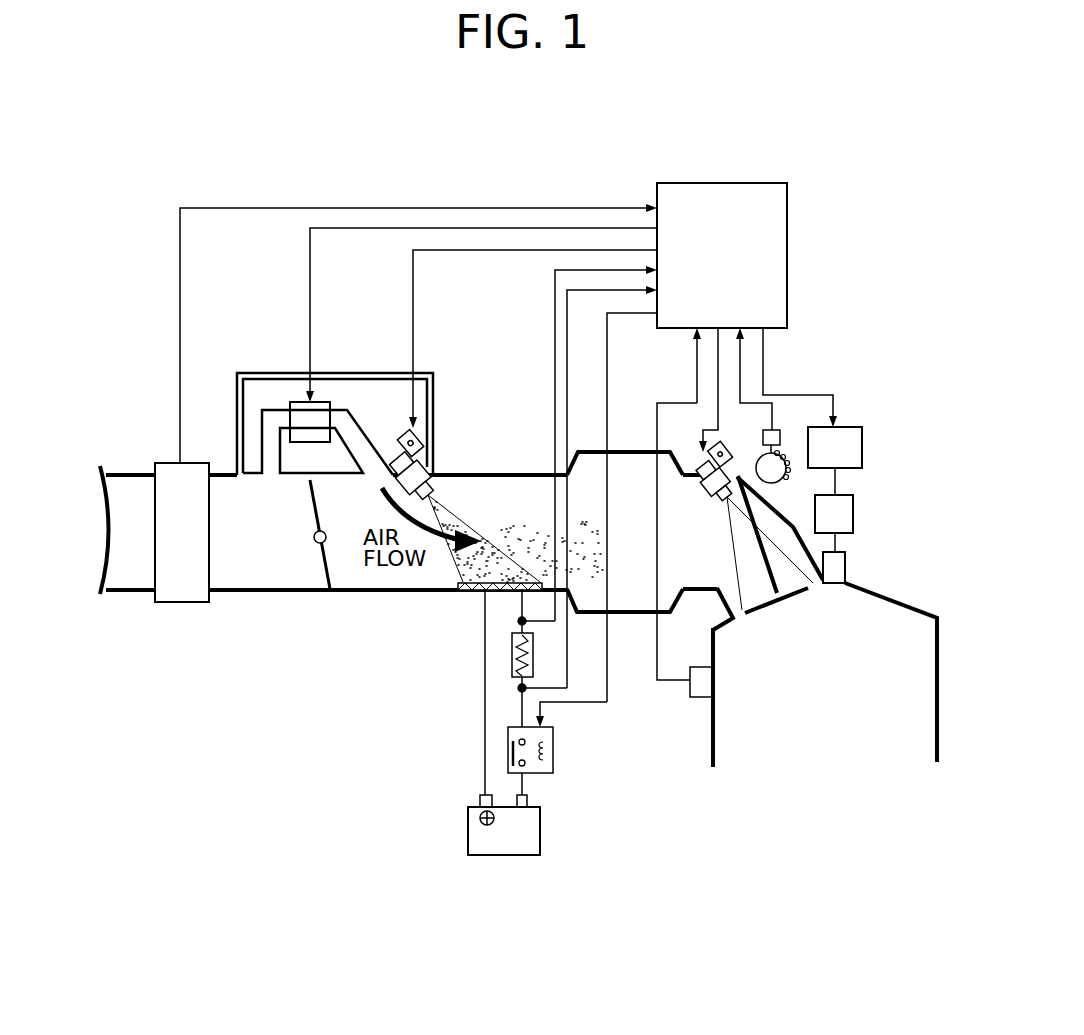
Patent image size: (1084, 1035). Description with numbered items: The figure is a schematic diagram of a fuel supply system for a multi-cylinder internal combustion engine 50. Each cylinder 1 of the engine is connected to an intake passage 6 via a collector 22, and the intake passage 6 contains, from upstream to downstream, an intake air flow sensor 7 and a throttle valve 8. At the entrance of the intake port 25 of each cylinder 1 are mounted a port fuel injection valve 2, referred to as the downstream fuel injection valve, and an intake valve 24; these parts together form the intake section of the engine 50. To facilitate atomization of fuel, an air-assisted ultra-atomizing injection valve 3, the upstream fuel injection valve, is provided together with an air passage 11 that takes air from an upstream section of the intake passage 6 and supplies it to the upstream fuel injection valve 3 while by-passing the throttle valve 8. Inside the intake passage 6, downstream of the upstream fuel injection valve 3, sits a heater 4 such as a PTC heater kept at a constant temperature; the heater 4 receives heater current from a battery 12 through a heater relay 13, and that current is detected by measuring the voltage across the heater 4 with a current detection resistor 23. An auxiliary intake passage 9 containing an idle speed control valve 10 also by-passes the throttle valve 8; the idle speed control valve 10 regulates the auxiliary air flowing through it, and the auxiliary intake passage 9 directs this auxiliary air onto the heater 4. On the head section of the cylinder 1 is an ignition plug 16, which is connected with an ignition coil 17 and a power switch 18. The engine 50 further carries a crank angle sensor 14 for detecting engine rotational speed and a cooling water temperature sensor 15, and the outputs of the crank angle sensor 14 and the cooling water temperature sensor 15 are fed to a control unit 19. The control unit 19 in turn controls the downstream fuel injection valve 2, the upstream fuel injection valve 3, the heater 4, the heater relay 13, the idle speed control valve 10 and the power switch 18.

The cylinder 1 is at (712, 757).
The port fuel injection valve 2 is at (700, 455).
The air-assisted type ultra-atomizing injection valve 3 is at (432, 420).
The heater 4 is at (456, 593).
The intake passage 6 is at (244, 596).
The intake air flow sensor 7 is at (165, 462).
The throttle valve 8 is at (325, 580).
The auxiliary intake passage 9 is at (278, 408).
The idle speed control valve 10 is at (320, 401).
The air passage 11 is at (430, 372).
The battery 12 is at (468, 818).
The heater relay 13 is at (553, 766).
The crank angle sensor 14 is at (775, 425).
The cooling water temperature sensor 15 is at (698, 698).
The ignition plug 16 is at (855, 562).
The ignition coil 17 is at (853, 505).
The power switch 18 is at (862, 440).
The control unit 19 is at (755, 183).
The collector 22 is at (629, 614).
The current detection resistor 23 is at (512, 661).
The intake valve 24 is at (790, 598).
The intake port 25 is at (720, 606).
The multi-cylinder internal combustion engine 50 is at (872, 326).